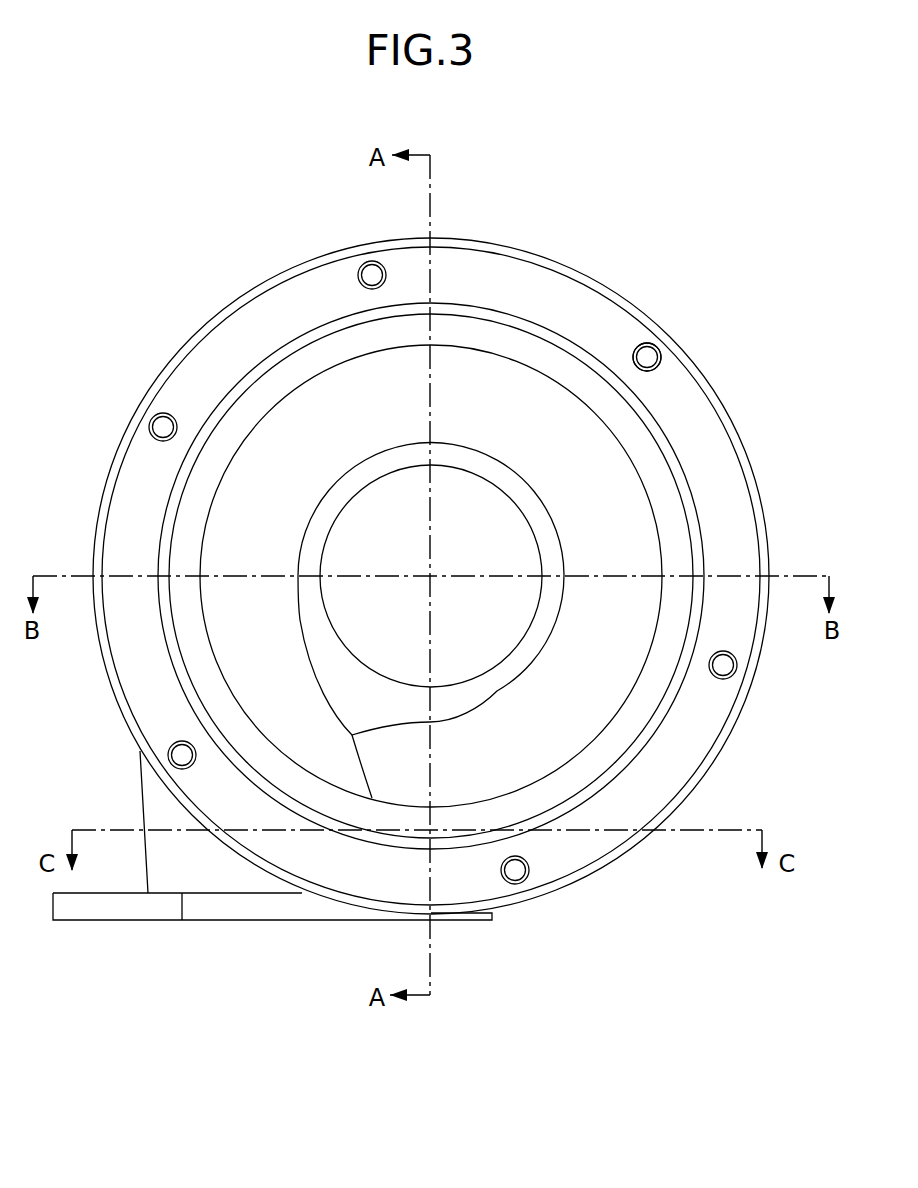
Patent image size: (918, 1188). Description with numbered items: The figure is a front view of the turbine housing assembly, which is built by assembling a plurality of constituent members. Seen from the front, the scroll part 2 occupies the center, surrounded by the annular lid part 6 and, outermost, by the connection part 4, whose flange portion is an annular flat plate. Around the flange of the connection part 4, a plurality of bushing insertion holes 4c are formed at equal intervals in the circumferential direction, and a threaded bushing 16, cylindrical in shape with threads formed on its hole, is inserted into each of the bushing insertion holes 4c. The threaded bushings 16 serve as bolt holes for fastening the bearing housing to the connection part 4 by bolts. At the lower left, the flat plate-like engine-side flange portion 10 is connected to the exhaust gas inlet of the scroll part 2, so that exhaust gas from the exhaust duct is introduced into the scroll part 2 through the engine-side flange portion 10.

The scroll part 2 is at (607, 536).
The connection part 4 is at (564, 312).
The bushing insertion holes 4c is at (650, 365).
The annular lid part 6 is at (520, 347).
The engine-side flange portion 10 is at (105, 910).
The threaded bushing 16 is at (645, 358).